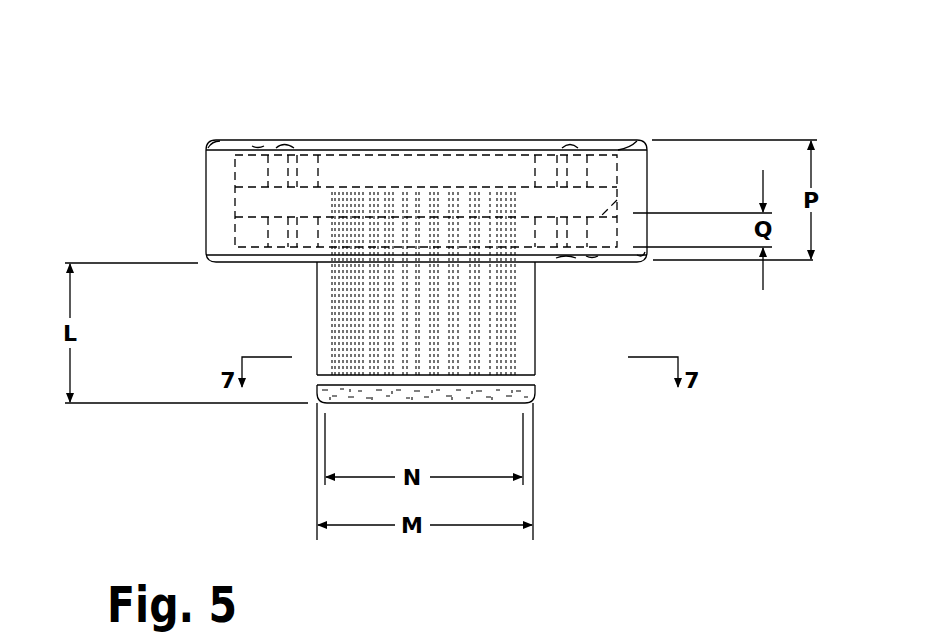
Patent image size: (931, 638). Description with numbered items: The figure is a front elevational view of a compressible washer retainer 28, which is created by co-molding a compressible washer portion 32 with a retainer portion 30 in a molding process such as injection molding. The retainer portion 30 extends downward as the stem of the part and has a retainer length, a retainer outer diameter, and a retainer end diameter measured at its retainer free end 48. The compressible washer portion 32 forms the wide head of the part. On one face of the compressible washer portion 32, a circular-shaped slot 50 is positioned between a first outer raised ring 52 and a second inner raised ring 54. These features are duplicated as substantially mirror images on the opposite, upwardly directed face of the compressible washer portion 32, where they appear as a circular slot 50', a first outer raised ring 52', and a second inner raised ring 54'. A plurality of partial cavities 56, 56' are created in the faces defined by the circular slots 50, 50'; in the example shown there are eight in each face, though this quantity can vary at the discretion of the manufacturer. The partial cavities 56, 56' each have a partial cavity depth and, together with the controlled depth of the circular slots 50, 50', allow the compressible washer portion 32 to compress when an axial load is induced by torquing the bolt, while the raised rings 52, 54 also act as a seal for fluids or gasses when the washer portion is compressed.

The compressible washer retainer 28 is at (700, 70).
The retainer portion 30 is at (536, 356).
The compressible washer portion 32 is at (217, 178).
The retainer free end 48 is at (436, 408).
The circular-shaped slot 50 is at (608, 298).
The circular-shaped slot 50' is at (291, 94).
The first outer raised ring 52 is at (667, 287).
The first outer raised ring 52' is at (237, 109).
The second inner raised ring 54 is at (570, 298).
The second inner raised ring 54' is at (456, 108).
The partial cavity 56 is at (662, 189).
The partial cavity 56' is at (678, 122).